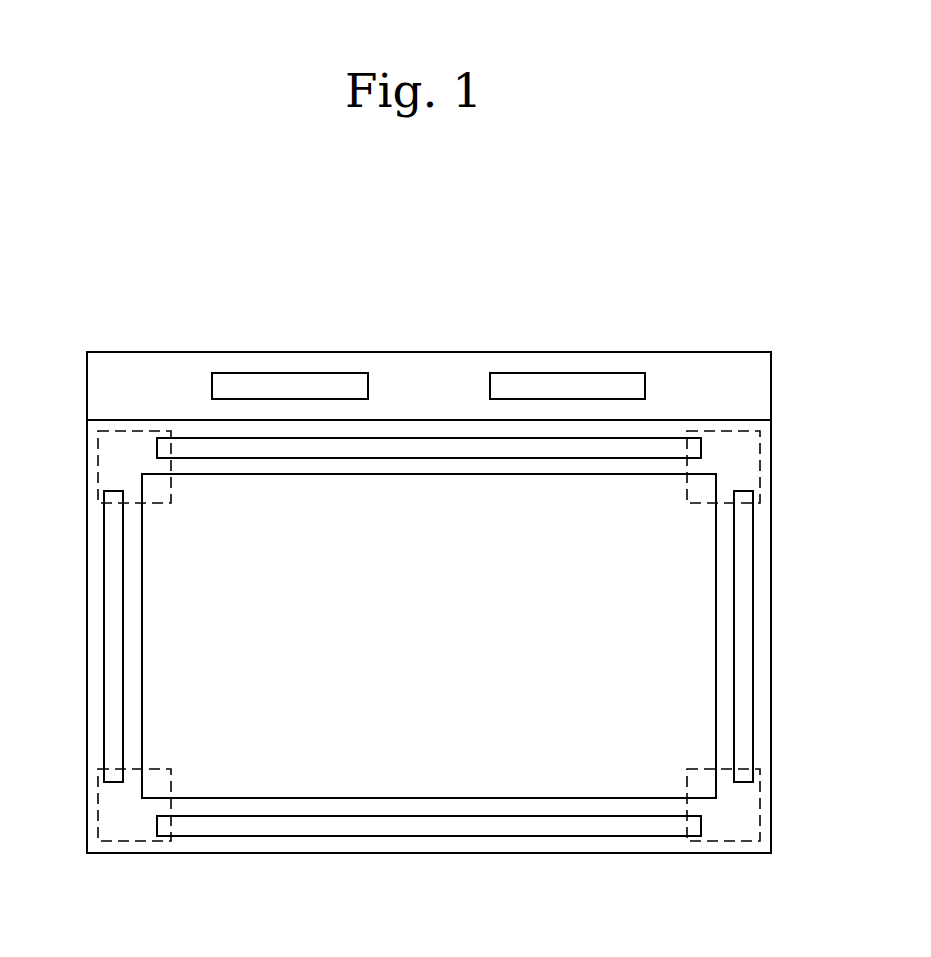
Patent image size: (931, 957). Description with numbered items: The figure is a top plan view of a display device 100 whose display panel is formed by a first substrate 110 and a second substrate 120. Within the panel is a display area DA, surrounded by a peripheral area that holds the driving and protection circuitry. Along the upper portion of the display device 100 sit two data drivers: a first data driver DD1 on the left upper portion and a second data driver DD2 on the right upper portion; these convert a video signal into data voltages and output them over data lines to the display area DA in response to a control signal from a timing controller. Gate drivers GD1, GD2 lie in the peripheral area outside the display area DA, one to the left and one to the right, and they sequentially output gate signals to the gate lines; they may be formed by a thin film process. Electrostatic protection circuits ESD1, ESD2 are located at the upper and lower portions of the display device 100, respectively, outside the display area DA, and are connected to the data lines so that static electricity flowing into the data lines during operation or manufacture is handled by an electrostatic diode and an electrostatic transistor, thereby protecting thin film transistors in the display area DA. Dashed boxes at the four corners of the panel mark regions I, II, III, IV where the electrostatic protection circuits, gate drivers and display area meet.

The display device 100 is at (747, 257).
The first substrate 110 is at (771, 383).
The second substrate 120 is at (771, 557).
The first data driver DD1 is at (289, 373).
The second data driver DD2 is at (566, 373).
The first electrostatic protection circuit ESD1 is at (425, 438).
The second electrostatic protection circuit ESD2 is at (430, 836).
The first gate driver GD1 is at (753, 610).
The second gate driver GD2 is at (104, 632).
The display area DA is at (690, 651).
The first corner region I is at (98, 459).
The second corner region II is at (760, 455).
The third corner region III is at (98, 795).
The fourth corner region IV is at (760, 792).